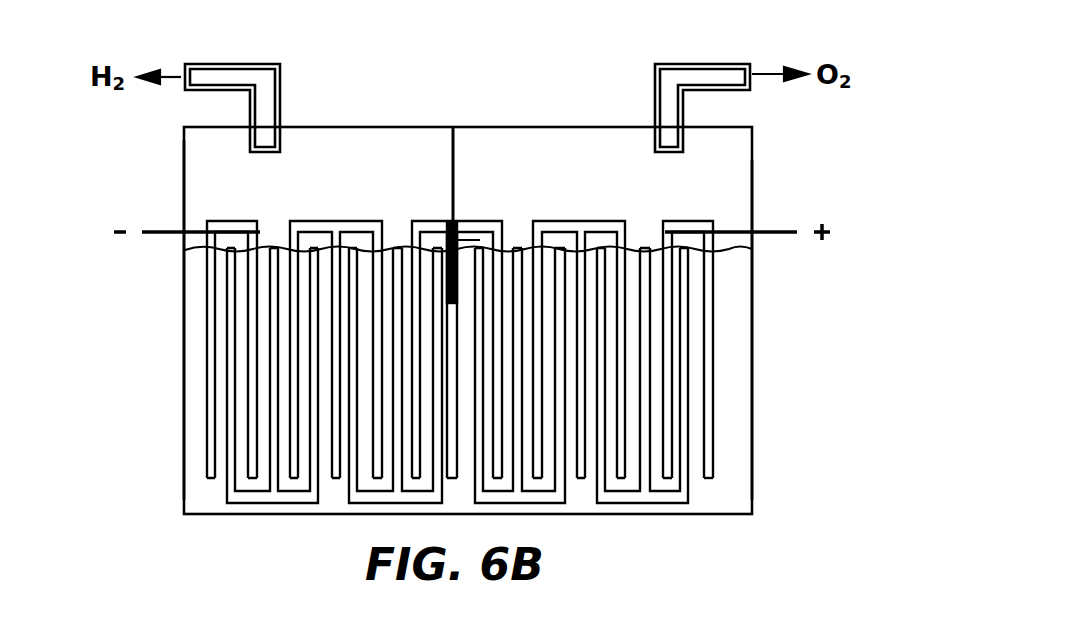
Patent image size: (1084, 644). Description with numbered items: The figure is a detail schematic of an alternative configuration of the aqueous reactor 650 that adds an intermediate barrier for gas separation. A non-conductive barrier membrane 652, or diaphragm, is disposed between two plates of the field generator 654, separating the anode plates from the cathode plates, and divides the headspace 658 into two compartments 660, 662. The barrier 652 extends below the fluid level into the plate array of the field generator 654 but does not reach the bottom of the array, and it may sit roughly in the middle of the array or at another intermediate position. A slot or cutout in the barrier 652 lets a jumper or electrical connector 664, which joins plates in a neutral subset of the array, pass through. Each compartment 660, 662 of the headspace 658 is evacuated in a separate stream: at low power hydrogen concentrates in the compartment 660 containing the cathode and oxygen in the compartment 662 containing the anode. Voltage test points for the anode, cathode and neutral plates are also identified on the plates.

The aqueous reactor 650 is at (693, 515).
The non-conductive barrier membrane 652 is at (450, 147).
The field generator 654 is at (710, 408).
The headspace 658 is at (727, 158).
The compartment 660 is at (207, 173).
The compartment 662 is at (712, 183).
The jumper or electrical connector 664 is at (468, 248).